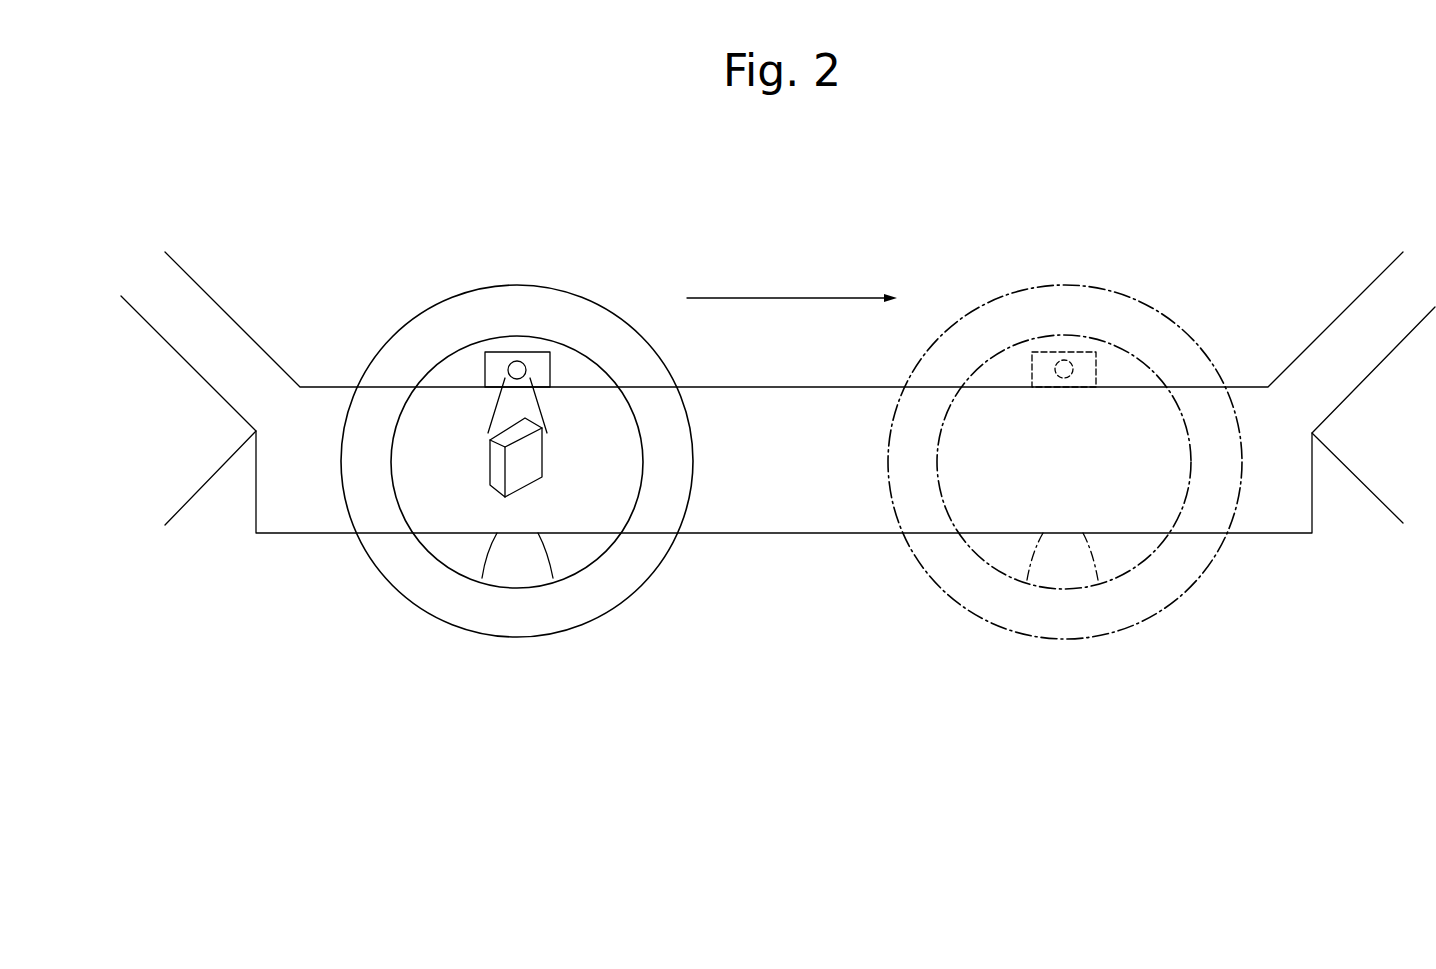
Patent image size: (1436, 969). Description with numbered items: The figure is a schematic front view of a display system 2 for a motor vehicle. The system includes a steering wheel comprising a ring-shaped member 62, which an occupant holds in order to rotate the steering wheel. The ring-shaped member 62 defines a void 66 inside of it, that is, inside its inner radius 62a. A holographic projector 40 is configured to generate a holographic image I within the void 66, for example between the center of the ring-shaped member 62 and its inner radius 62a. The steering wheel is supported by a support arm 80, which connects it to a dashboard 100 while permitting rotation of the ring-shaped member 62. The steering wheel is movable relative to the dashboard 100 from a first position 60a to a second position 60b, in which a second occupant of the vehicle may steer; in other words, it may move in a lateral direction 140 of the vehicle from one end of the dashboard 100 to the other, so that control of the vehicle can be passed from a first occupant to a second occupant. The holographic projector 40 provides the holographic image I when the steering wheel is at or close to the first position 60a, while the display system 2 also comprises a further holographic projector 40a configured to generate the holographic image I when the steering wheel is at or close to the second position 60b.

The display system 2 is at (583, 216).
The holographic projector 40 is at (516, 352).
The further holographic projector 40a is at (1070, 350).
The first position 60a is at (510, 458).
The second position 60b is at (1065, 430).
The ring-shaped member 62 is at (635, 570).
The inner radius 62a is at (573, 572).
The void 66 is at (450, 500).
The support arm 80 is at (517, 560).
The dashboard 100 is at (808, 513).
The lateral direction 140 is at (775, 298).
The holographic image I is at (528, 455).